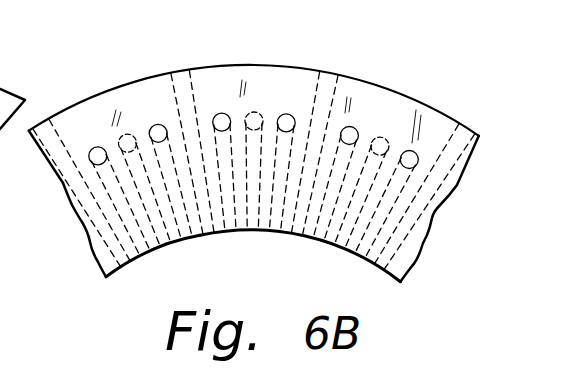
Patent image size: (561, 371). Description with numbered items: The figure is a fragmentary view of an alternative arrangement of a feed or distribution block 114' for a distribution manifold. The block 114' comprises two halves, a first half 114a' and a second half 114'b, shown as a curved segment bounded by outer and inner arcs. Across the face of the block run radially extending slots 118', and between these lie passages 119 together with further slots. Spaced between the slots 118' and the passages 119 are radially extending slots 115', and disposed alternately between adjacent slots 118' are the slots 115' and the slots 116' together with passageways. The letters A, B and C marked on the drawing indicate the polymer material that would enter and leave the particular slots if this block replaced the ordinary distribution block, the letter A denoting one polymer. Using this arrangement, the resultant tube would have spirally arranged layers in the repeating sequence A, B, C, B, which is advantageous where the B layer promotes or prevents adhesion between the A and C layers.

The feed or distribution block 114' is at (254, 151).
The half of the distribution block 114'b is at (257, 138).
The half of the distribution block 114a' is at (254, 92).
The holes 119 is at (158, 124).
The radially extending slots 118' is at (253, 259).
The slots 116' is at (207, 262).
The radially extending slots 115' is at (89, 248).
The polymer material A is at (40, 118).